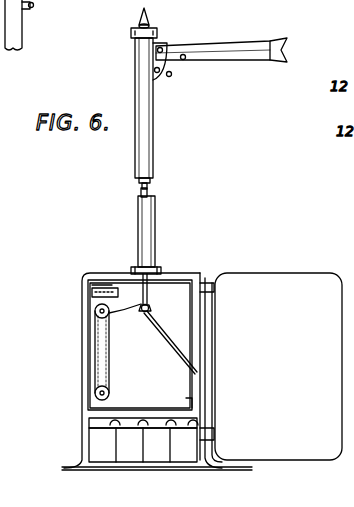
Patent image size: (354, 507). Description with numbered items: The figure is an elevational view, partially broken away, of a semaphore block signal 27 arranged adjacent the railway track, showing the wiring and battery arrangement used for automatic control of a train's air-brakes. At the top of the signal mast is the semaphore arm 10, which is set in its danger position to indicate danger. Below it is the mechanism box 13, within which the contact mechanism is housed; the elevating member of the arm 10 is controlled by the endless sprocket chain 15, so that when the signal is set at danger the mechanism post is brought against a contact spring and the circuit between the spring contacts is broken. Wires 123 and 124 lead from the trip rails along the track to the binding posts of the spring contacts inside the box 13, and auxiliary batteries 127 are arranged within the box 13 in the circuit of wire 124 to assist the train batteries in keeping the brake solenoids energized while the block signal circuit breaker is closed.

The semaphore arm 10 is at (232, 48).
The block signal 27 is at (129, 141).
The mechanism box 13 is at (97, 279).
The wire 124 is at (190, 278).
The wire 123 is at (90, 285).
The endless sprocket chain 15 is at (93, 361).
The auxiliary batteries 127 is at (163, 452).